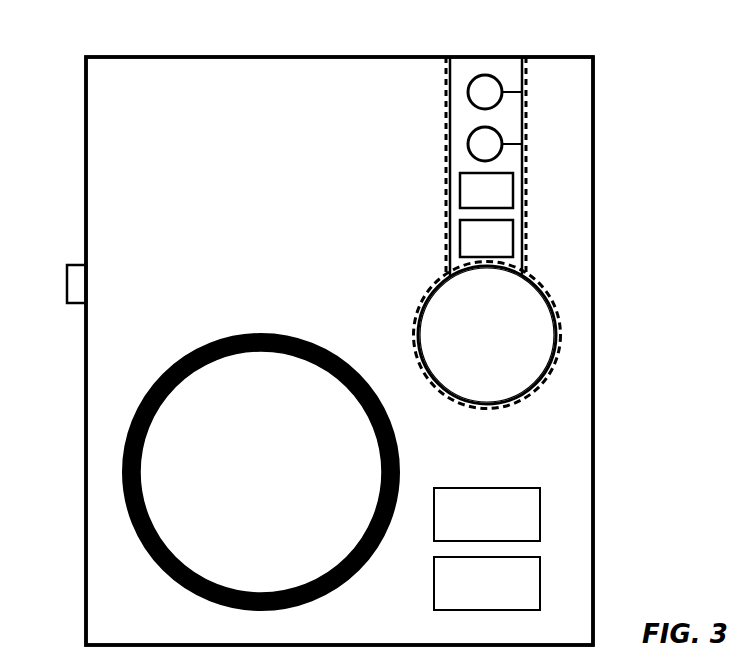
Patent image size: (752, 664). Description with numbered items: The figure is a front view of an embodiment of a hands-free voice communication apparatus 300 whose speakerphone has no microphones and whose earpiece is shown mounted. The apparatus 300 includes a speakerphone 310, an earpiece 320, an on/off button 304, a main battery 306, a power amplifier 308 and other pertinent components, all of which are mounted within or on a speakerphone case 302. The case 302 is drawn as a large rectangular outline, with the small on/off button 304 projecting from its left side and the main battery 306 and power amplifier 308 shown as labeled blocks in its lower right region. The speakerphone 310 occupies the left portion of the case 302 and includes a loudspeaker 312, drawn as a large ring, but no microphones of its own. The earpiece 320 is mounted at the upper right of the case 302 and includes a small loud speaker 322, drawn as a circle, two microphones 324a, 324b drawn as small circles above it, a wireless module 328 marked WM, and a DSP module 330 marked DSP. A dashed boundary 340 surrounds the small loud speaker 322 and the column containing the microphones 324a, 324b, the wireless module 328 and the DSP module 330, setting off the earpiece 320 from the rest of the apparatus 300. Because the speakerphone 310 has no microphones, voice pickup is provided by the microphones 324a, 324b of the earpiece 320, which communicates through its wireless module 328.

The hands-free voice communication apparatus 300 is at (78, 33).
The speakerphone case 302 is at (84, 472).
The on/off button 304 is at (66, 284).
The main battery 306 is at (540, 583).
The power amplifier 308 is at (540, 513).
The speakerphone 310 is at (261, 441).
The loudspeaker 312 is at (261, 472).
The earpiece 320 is at (489, 57).
The small loud speaker 322 is at (487, 335).
The microphone 324a is at (527, 92).
The microphone 324b is at (527, 144).
The wireless module 328 is at (513, 193).
The DSP module 330 is at (513, 237).
The dashed boundary of module 340 is at (409, 333).